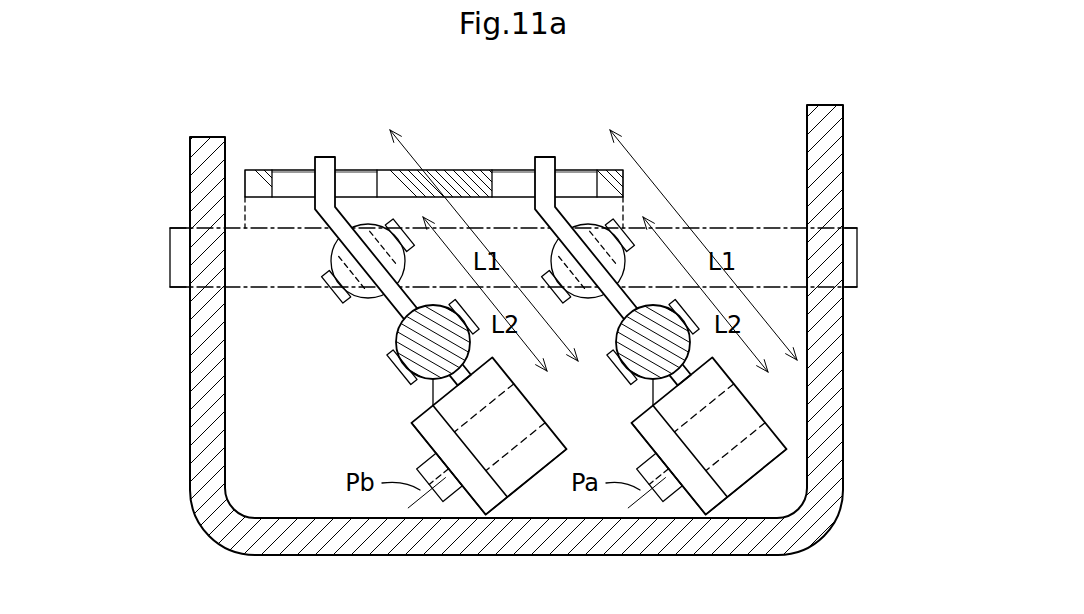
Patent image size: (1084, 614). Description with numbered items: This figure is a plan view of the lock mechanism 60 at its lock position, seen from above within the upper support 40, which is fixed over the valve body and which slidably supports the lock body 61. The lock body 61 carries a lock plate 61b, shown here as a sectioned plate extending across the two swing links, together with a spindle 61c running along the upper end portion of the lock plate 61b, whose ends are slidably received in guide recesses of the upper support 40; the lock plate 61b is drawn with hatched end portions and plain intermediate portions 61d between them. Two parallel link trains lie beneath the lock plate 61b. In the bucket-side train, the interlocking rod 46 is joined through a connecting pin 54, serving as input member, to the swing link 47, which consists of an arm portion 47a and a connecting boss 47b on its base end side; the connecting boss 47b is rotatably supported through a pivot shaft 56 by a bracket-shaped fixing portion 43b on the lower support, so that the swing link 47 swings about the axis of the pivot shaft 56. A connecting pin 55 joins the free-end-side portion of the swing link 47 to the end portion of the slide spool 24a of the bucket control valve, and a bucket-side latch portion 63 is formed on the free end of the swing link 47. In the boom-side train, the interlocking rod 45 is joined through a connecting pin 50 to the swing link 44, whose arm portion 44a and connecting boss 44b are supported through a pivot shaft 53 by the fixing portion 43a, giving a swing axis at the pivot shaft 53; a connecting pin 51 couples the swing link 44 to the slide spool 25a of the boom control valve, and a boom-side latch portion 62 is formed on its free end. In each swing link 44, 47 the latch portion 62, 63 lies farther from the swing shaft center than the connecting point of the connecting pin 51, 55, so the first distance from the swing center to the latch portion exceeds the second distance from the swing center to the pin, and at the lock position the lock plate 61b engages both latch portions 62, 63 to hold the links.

The upper support 40 is at (190, 408).
The lock mechanism 60 is at (661, 101).
The lock body 61 is at (443, 159).
The lock plate 61b is at (245, 185).
The spindle 61c is at (770, 226).
The plate intermediate portion 61d is at (289, 176).
The boom-side latch portion 62 is at (552, 178).
The bucket-side latch portion 63 is at (330, 178).
The slide spool 24a is at (331, 255).
The slide spool 25a is at (552, 250).
The connecting pin 51 is at (627, 247).
The connecting pin 55 is at (328, 289).
The swing link 47 is at (386, 318).
The arm portion 47a is at (398, 356).
The connecting boss 47b is at (531, 462).
The swing link 44 is at (789, 433).
The arm portion 44a is at (613, 318).
The connecting boss 44b is at (760, 462).
The connecting pin 54 is at (431, 382).
The connecting pin 50 is at (652, 400).
The interlocking rod 46 is at (430, 412).
The interlocking rod 45 is at (643, 412).
The pivot shaft 56 is at (428, 498).
The pivot shaft 53 is at (654, 498).
The fixing portion 43a is at (711, 518).
The fixing portion 43b is at (489, 518).